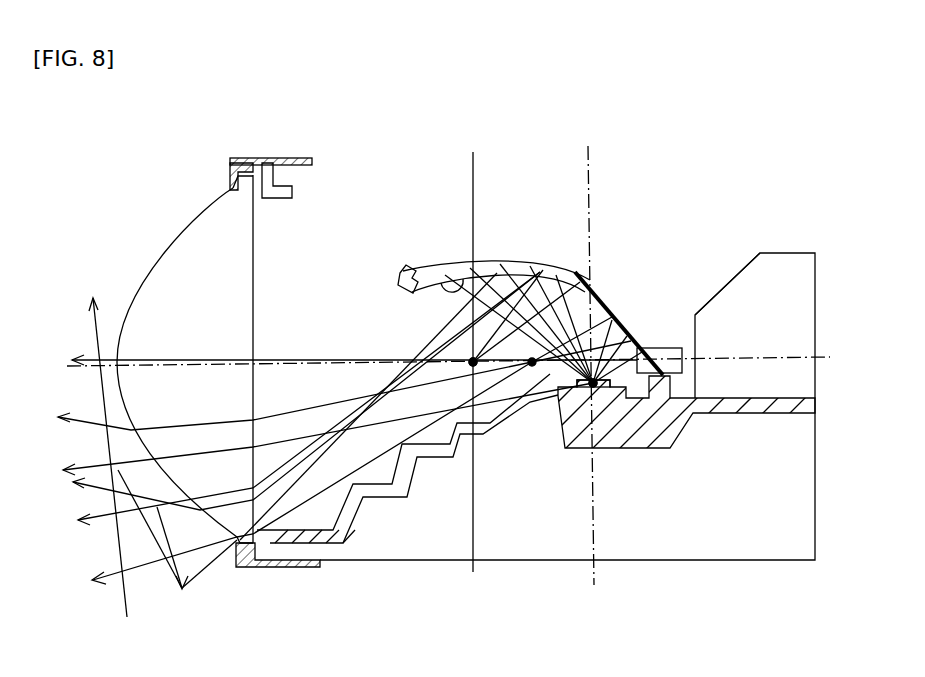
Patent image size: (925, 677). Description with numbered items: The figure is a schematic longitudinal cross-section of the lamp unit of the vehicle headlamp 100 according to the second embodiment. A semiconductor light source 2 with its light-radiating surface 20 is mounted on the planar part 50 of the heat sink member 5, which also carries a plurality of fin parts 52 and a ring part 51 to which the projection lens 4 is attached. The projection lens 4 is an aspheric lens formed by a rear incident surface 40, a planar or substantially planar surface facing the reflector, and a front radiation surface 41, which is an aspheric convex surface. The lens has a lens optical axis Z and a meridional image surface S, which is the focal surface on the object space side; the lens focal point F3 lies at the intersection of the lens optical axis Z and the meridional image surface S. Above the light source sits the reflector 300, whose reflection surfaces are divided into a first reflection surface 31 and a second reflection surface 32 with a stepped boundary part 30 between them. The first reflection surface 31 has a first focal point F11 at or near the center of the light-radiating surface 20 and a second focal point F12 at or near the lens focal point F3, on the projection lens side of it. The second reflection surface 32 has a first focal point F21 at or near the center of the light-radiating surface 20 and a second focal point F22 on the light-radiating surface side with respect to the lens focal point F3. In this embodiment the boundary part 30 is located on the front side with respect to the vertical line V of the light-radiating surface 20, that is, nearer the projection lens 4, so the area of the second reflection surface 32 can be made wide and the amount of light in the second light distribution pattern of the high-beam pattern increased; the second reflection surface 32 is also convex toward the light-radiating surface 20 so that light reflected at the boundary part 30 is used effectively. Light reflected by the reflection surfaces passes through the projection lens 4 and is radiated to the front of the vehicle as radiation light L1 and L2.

The vehicle headlamp 100 is at (684, 186).
The semiconductor light source 2 is at (573, 392).
The light-radiating surface 20 is at (527, 404).
The projection lens 4 is at (212, 350).
The incident surface 40 is at (254, 240).
The radiation surface 41 is at (172, 238).
The heat sink member 5 is at (732, 277).
The planar part 50 is at (668, 417).
The ring part 51 is at (258, 160).
The fin parts 52 is at (776, 262).
The boundary part 30 is at (583, 270).
The reflector 300 is at (466, 258).
The first reflection surface 31 is at (426, 262).
The second reflection surface 32 is at (612, 327).
The first focal point of the first reflection surface F11 is at (596, 387).
The first focal point of the second reflection surface F21 is at (593, 383).
The second focal point of the first reflection surface F12 is at (470, 360).
The lens focal point F3 is at (473, 362).
The second focal point of the second reflection surface F22 is at (532, 358).
The radiation light L1 is at (342, 447).
The radiation light L2 is at (347, 459).
The meridional image surface S is at (474, 168).
The vertical line V is at (591, 364).
The lens optical axis Z is at (446, 364).